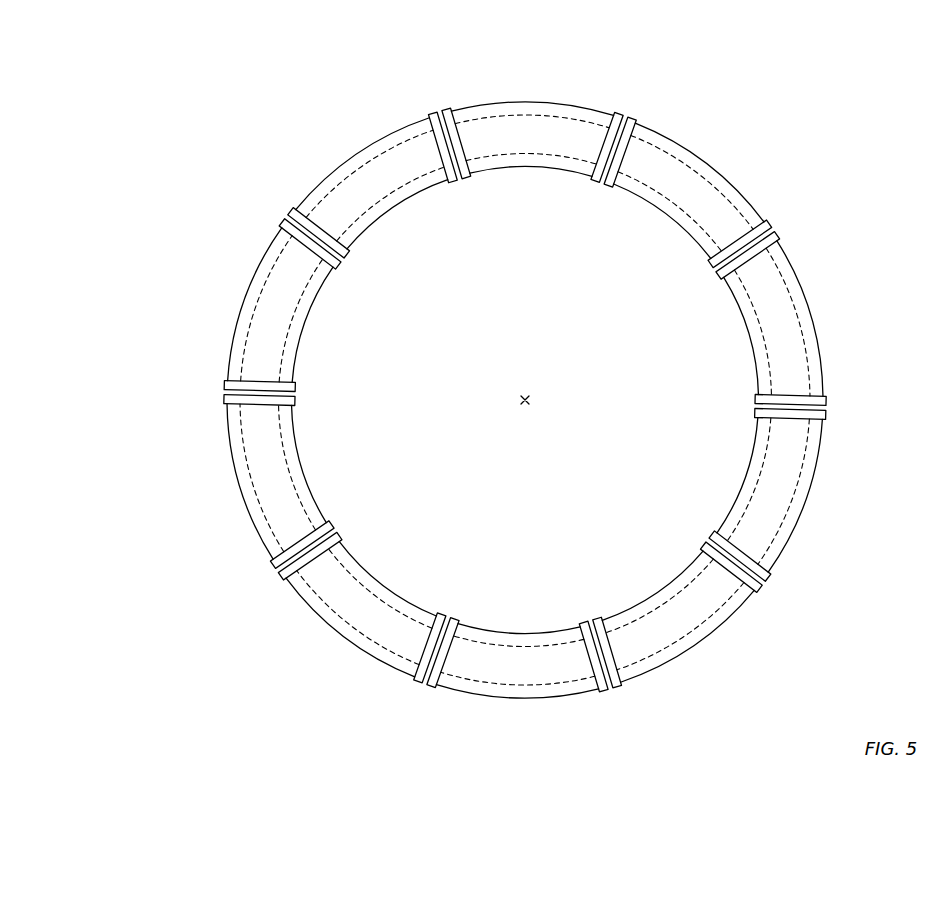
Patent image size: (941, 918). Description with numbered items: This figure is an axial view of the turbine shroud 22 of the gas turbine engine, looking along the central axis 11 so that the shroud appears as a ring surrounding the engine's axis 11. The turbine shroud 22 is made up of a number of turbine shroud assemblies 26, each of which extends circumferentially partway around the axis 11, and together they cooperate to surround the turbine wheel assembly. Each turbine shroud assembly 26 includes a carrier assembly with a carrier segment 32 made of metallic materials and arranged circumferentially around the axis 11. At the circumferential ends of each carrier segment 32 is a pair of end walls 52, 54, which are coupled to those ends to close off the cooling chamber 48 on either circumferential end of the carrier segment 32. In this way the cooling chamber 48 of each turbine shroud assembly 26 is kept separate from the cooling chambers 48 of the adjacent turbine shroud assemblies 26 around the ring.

The axis 11 is at (527, 397).
The turbine shroud 22 is at (523, 397).
The turbine shroud assembly 26 is at (377, 123).
The carrier segment 32 is at (352, 153).
The cooling chamber 48 is at (318, 182).
The end wall 52 is at (432, 113).
The end wall 54 is at (450, 110).